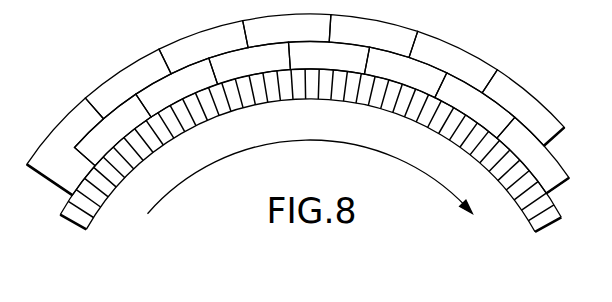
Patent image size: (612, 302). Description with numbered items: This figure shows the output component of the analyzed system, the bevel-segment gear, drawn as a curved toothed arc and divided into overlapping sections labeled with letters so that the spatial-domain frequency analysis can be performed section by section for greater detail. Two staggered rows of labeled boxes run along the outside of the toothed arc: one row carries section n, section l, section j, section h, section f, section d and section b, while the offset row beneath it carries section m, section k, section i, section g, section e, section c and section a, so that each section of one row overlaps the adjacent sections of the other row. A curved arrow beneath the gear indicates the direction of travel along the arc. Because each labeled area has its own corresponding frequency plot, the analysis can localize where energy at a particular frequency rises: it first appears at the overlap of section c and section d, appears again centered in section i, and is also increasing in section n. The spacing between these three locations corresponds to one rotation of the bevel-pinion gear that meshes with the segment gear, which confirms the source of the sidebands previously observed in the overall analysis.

The section a is at (533, 155).
The section b is at (523, 108).
The section c is at (475, 105).
The section d is at (453, 61).
The section e is at (405, 72).
The section f is at (373, 36).
The section g is at (329, 57).
The section h is at (287, 31).
The section i is at (250, 63).
The section j is at (203, 47).
The section k is at (177, 87).
The section l is at (128, 84).
The section m is at (113, 130).
The section n is at (65, 146).